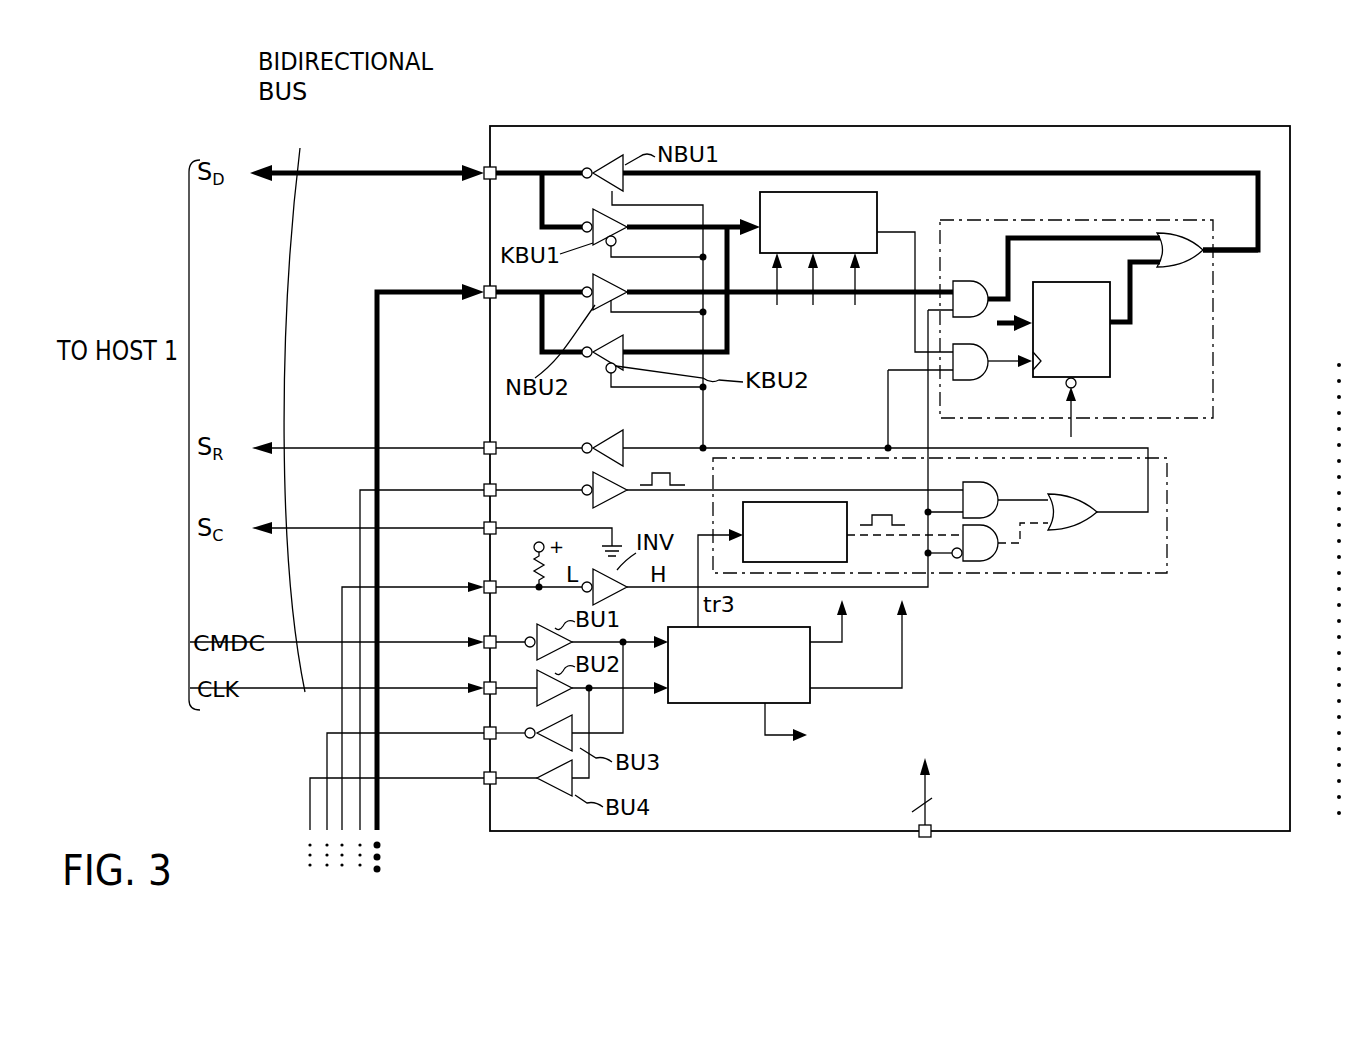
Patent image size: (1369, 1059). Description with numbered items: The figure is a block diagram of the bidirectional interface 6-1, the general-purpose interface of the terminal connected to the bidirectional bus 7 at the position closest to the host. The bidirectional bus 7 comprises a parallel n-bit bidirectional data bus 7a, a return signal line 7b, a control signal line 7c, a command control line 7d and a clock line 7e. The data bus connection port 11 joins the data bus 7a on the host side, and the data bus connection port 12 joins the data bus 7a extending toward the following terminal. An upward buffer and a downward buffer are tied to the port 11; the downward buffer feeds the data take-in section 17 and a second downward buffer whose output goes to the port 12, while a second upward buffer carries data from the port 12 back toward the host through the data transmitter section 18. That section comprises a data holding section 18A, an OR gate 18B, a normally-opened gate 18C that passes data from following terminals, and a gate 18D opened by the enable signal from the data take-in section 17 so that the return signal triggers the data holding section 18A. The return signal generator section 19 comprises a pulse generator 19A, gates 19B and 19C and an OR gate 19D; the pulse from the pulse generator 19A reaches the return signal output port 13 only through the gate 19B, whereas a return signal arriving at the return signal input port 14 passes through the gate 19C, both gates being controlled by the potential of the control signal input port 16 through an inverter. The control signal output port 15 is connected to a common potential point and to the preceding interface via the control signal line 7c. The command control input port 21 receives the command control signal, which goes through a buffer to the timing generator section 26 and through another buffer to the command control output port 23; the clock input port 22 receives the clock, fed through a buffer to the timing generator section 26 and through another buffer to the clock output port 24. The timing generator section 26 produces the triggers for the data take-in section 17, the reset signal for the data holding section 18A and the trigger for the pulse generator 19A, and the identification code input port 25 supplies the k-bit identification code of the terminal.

The bidirectional interface 6-1 is at (1290, 340).
The bidirectional bus 7 is at (298, 170).
The bidirectional data bus 7a is at (373, 172).
The return signal line 7b is at (334, 448).
The control signal line 7c is at (334, 530).
The command control line 7d is at (332, 645).
The clock line 7e is at (332, 692).
The data bus connection port 11 is at (486, 166).
The data bus connection port 12 is at (486, 282).
The return signal output port 13 is at (484, 440).
The return signal input port 14 is at (482, 488).
The control signal output port 15 is at (482, 524).
The control signal input port 16 is at (480, 582).
The data take-in section 17 is at (760, 200).
The data transmitter section 18 is at (1213, 402).
The data holding section 18A is at (1110, 360).
The OR gate 18B is at (1172, 268).
The gate 18C is at (968, 281).
The gate 18D is at (968, 380).
The return signal generator section 19 is at (1167, 560).
The pulse generator 19A is at (850, 556).
The gate 19B is at (1000, 556).
The gate 19C is at (995, 490).
The OR gate 19D is at (1074, 500).
The command control input port 21 is at (482, 638).
The clock input port 22 is at (482, 684).
The command control output port 23 is at (482, 732).
The clock output port 24 is at (482, 777).
The identification code input port 25 is at (930, 836).
The timing generator section 26 is at (726, 704).